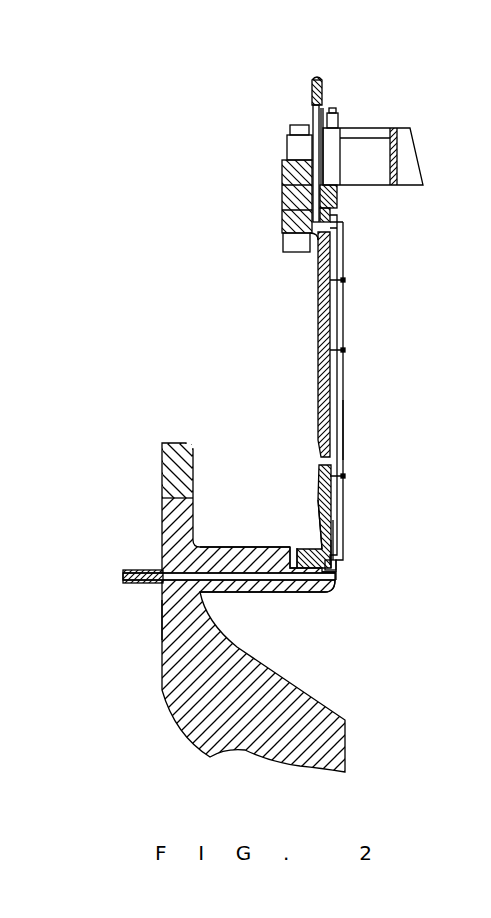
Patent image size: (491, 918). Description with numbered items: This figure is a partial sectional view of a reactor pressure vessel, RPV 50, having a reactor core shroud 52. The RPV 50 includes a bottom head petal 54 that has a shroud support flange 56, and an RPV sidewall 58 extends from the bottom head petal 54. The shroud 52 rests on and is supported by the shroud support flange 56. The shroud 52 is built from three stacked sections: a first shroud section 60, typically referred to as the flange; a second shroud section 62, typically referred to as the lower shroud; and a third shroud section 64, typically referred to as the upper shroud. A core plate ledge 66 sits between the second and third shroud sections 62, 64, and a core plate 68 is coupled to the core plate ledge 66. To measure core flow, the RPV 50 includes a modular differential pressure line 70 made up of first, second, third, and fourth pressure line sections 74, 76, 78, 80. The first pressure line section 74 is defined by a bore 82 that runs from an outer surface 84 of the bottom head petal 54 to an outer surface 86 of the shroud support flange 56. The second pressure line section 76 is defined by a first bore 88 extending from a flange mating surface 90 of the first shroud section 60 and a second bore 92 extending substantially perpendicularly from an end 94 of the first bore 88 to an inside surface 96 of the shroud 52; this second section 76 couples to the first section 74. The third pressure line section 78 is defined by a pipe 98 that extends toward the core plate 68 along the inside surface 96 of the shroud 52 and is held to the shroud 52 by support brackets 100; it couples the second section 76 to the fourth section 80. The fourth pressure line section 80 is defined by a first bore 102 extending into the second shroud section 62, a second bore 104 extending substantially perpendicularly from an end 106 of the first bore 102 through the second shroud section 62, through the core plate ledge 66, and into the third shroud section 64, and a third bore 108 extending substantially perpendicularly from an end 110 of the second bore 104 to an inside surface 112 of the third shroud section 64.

The RPV 50 is at (232, 80).
The reactor core shroud 52 is at (293, 298).
The bottom head petal 54 is at (172, 720).
The shroud support flange 56 is at (293, 592).
The RPV sidewall 58 is at (146, 471).
The first shroud section 60 is at (317, 505).
The second shroud section 62 is at (316, 362).
The third shroud section 64 is at (308, 91).
The core plate ledge 66 is at (282, 197).
The core plate 68 is at (380, 128).
The modular differential pressure line 70 is at (356, 402).
The first pressure line section 74 is at (243, 583).
The second pressure line section 76 is at (336, 563).
The third pressure line section 78 is at (347, 317).
The fourth pressure line section 80 is at (283, 159).
The bore 82 is at (122, 577).
The outer surface 84 is at (162, 615).
The outer surface 86 is at (338, 578).
The first bore 88 is at (336, 590).
The flange mating surface 90 is at (292, 556).
The second bore 92 is at (333, 548).
The end 94 is at (313, 550).
The inside surface 96 is at (333, 527).
The pipe 98 is at (345, 436).
The support brackets 100 is at (345, 280).
The first bore 102 is at (324, 242).
The second bore 104 is at (338, 198).
The end 106 is at (314, 235).
The third bore 108 is at (320, 108).
The end 110 is at (311, 111).
The inside surface 112 is at (318, 80).